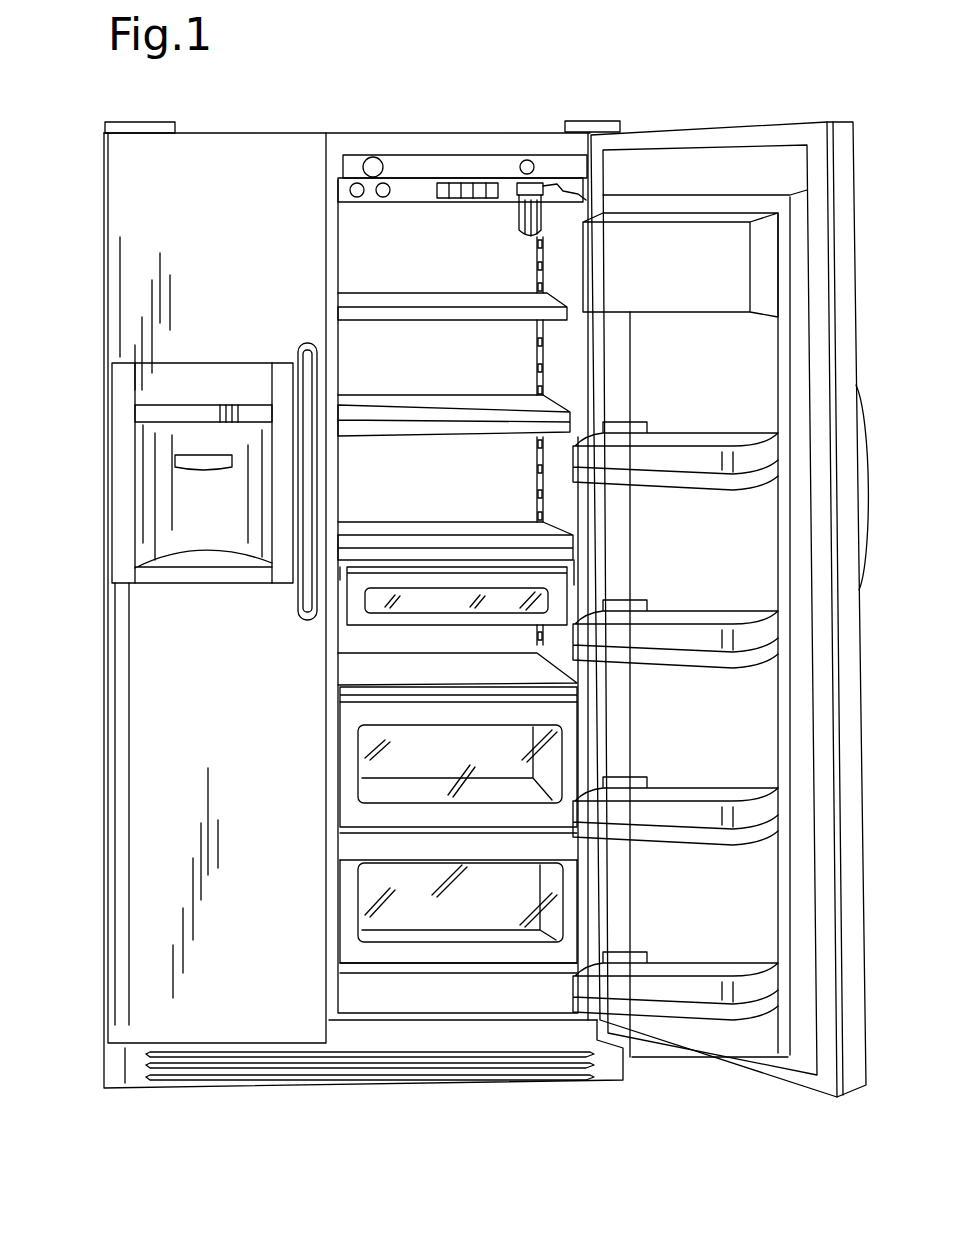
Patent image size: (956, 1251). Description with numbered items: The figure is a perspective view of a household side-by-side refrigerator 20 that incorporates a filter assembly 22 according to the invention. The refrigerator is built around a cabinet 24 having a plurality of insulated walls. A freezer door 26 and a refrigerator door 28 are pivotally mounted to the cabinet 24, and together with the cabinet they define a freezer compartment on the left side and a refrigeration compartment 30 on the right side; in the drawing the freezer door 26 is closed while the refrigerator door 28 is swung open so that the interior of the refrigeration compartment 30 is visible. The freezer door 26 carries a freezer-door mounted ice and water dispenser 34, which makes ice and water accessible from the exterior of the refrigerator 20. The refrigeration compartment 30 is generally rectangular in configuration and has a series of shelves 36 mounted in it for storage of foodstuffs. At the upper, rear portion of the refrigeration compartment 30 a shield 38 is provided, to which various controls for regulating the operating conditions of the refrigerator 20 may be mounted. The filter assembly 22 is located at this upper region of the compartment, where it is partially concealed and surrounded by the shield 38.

The refrigerator 20 is at (305, 123).
The filter assembly 22 is at (517, 223).
The cabinet 24 is at (540, 130).
The freezer door 26 is at (162, 968).
The refrigerator door 28 is at (850, 140).
The refrigeration compartment 30 is at (377, 247).
The ice and water dispenser 34 is at (185, 528).
The shelves 36 is at (459, 312).
The shield 38 is at (502, 165).